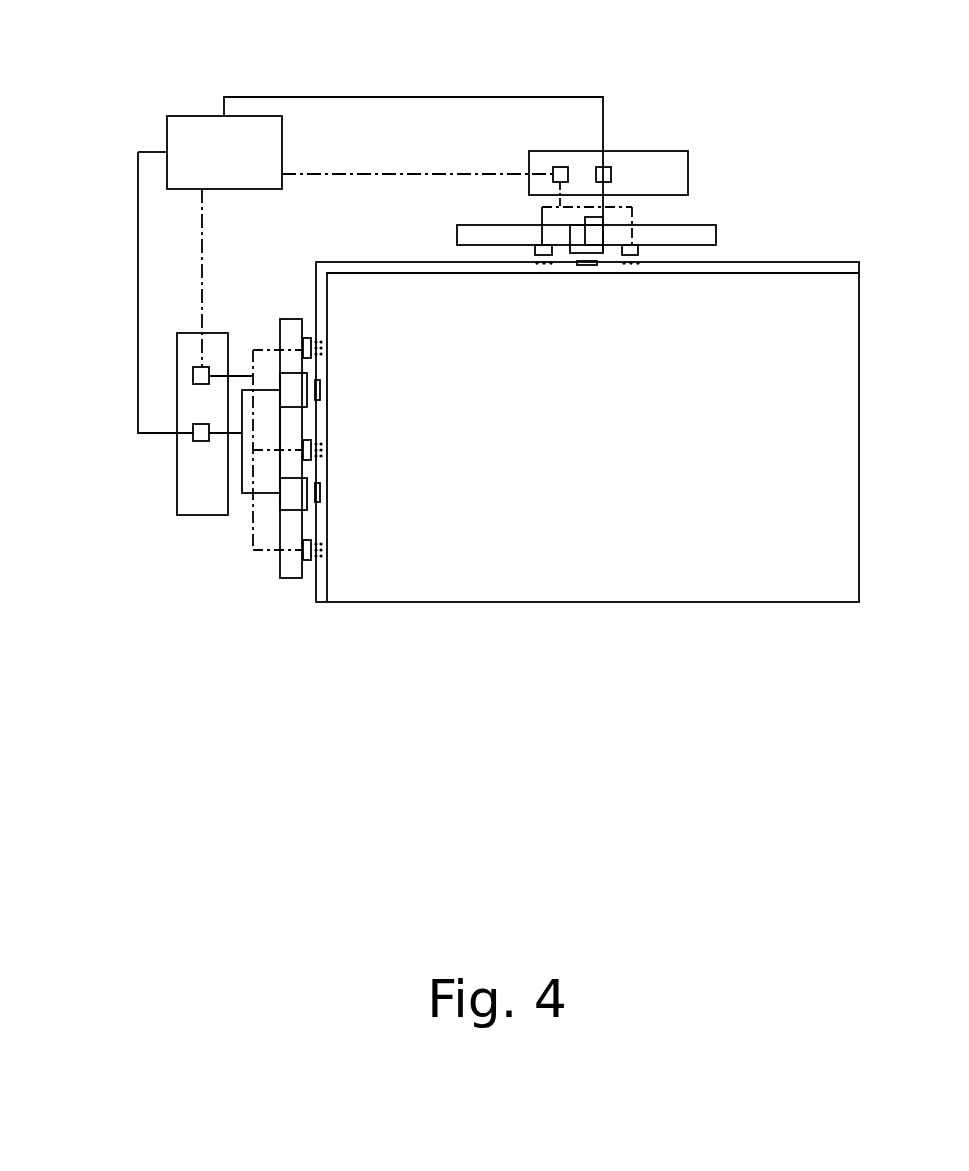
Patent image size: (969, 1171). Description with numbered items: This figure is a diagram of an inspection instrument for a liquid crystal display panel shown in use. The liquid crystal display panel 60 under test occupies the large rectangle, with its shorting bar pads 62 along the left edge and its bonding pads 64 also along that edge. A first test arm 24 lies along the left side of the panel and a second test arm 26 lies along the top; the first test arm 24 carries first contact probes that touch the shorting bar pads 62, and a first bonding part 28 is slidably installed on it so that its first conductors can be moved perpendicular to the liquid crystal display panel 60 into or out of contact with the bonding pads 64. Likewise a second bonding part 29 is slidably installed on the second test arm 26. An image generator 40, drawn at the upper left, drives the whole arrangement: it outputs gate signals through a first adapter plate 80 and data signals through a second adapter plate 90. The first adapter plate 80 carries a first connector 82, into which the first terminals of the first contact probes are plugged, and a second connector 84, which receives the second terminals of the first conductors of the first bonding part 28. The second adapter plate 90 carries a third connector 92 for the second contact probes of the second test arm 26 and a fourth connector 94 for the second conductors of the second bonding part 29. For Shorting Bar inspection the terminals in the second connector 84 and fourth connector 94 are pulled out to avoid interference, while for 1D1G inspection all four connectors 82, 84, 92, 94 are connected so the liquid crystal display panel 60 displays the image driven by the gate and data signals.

The first test arm 24 is at (285, 577).
The second test arm 26 is at (703, 235).
The first bonding part 28 is at (288, 503).
The second bonding part 29 is at (592, 238).
The image generator 40 is at (184, 137).
The liquid crystal display panel 60 is at (650, 532).
The shorting bar pads 62 is at (319, 560).
The bonding pads 64 is at (317, 497).
The first adapter plate 80 is at (192, 487).
The first connector 82 is at (198, 370).
The second connector 84 is at (198, 437).
The second adapter plate 90 is at (637, 157).
The third connector 92 is at (567, 170).
The fourth connector 94 is at (612, 168).